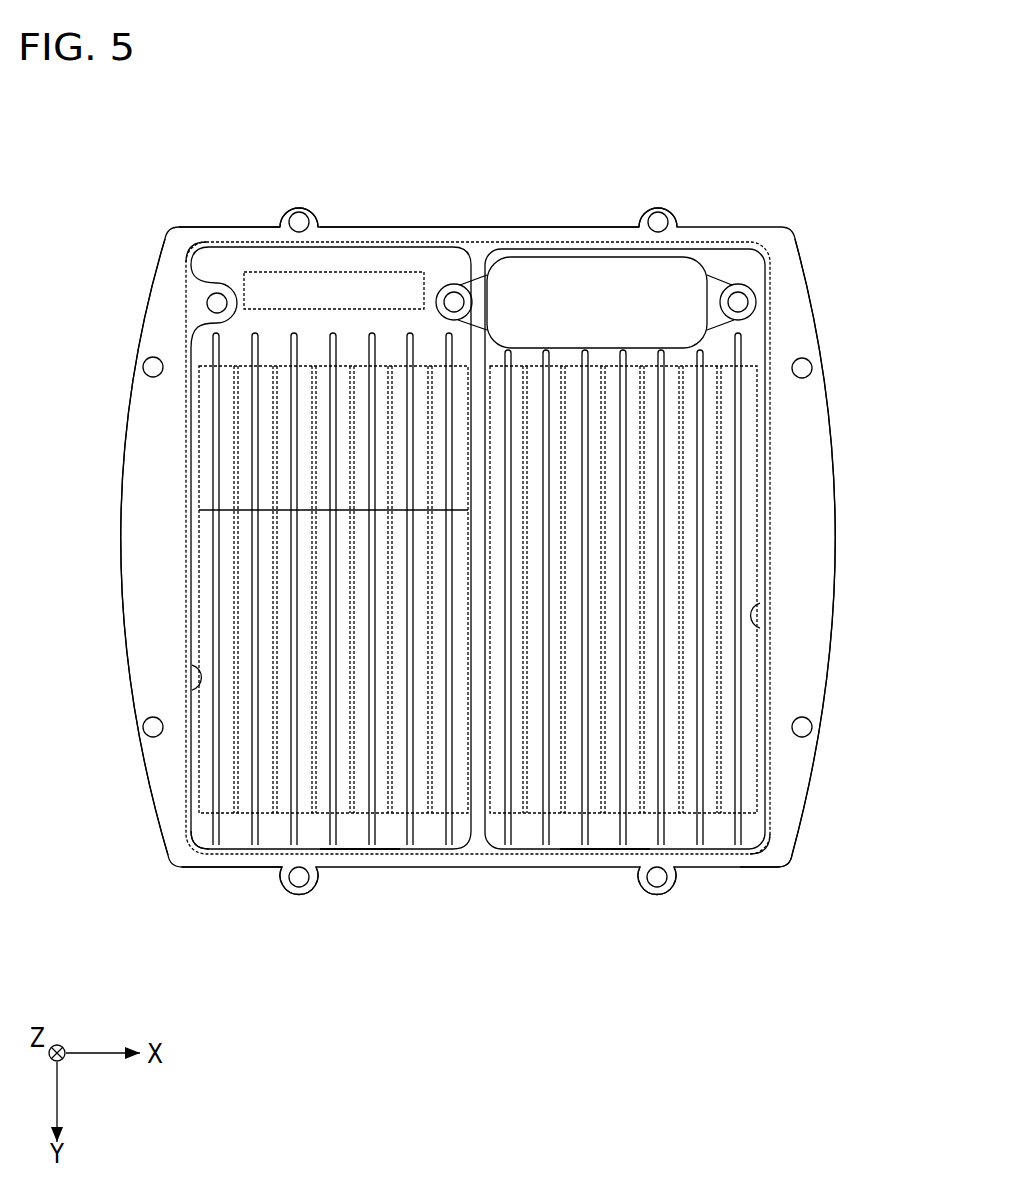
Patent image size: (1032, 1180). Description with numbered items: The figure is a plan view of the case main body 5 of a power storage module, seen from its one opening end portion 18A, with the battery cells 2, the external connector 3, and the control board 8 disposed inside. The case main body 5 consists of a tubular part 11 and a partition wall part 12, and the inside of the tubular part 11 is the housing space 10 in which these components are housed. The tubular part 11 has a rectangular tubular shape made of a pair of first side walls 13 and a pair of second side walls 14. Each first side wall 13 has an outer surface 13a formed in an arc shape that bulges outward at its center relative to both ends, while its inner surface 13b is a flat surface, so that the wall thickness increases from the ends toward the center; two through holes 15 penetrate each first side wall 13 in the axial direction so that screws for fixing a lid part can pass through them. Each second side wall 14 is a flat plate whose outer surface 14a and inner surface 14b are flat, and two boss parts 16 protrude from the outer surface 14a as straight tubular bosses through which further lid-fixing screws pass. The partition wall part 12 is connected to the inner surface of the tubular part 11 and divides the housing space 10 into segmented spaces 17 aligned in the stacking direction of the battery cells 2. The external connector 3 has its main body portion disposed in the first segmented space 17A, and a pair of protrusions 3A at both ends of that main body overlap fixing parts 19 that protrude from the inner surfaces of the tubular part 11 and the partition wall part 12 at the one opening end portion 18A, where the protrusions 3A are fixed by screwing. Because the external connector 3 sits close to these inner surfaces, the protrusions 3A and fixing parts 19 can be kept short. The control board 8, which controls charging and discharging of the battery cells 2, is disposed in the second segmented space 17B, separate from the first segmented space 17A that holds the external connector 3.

The case main body 5 is at (163, 227).
The battery cell 2 is at (198, 610).
The external connector 3 is at (597, 296).
The protrusion 3A is at (464, 283).
The control board 8 is at (350, 290).
The housing space 10 is at (200, 847).
The tubular part 11 is at (790, 868).
The partition wall part 12 is at (472, 510).
The first side wall 13 is at (145, 562).
The outer surface of first side wall 13a is at (122, 497).
The inner surface of first side wall 13b is at (195, 690).
The second side wall 14 is at (524, 240).
The outer surface of second side wall 14a is at (396, 226).
The inner surface of second side wall 14b is at (238, 262).
The through hole 15 is at (138, 367).
The boss part 16 is at (300, 206).
The segmented space 17 is at (485, 926).
The first segmented space 17A is at (603, 849).
The second segmented space 17B is at (352, 849).
The one opening end portion 18A is at (795, 822).
The fixing part 19 is at (451, 292).